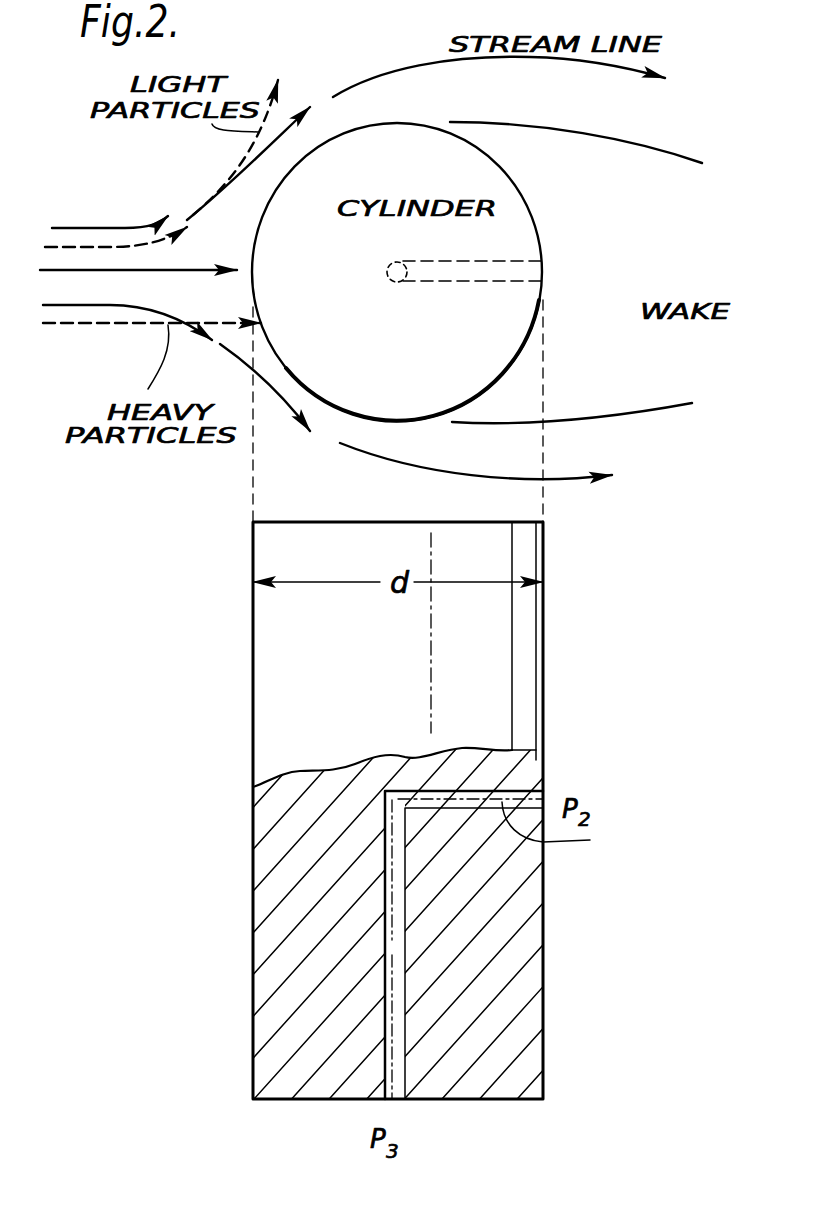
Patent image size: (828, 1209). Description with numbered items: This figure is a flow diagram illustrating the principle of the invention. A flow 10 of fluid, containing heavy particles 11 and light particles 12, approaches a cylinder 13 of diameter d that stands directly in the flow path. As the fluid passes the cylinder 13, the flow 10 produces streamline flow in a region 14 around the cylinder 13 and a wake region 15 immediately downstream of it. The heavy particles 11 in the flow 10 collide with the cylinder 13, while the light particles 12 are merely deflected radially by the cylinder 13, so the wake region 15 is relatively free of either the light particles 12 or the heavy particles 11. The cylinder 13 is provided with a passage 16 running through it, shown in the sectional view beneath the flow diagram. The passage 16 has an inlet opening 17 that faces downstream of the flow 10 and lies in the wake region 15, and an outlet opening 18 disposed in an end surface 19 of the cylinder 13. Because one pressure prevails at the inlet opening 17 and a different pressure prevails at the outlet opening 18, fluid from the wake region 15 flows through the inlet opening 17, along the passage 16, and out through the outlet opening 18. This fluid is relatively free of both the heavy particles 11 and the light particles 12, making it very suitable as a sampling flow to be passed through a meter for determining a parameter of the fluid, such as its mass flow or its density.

The flow 10 is at (93, 271).
The heavy particles 11 is at (279, 407).
The light particles 12 is at (193, 216).
The cylinder 13 is at (507, 173).
The region 14 is at (631, 97).
The wake region 15 is at (694, 279).
The passage 16 is at (500, 258).
The inlet opening 17 is at (543, 268).
The outlet opening 18 is at (397, 282).
The end surface 19 is at (518, 315).